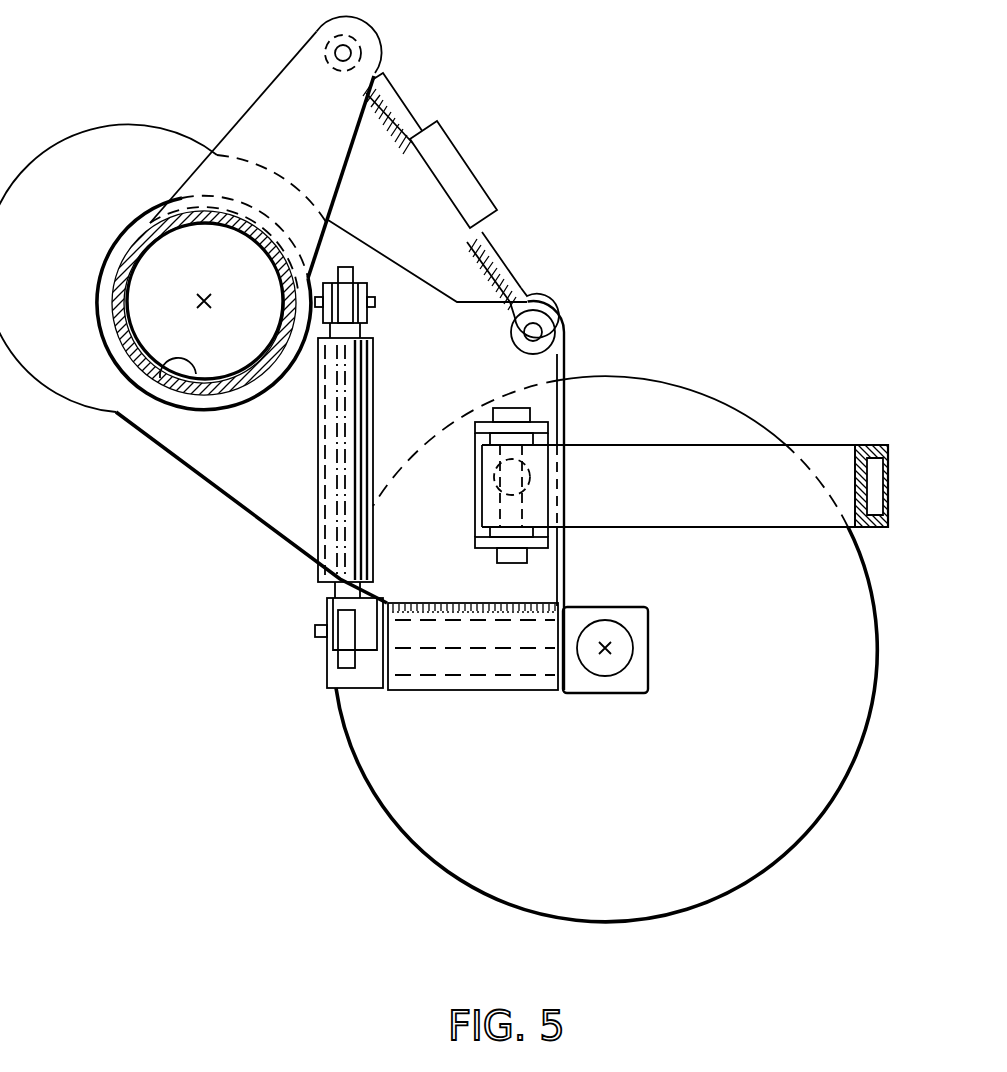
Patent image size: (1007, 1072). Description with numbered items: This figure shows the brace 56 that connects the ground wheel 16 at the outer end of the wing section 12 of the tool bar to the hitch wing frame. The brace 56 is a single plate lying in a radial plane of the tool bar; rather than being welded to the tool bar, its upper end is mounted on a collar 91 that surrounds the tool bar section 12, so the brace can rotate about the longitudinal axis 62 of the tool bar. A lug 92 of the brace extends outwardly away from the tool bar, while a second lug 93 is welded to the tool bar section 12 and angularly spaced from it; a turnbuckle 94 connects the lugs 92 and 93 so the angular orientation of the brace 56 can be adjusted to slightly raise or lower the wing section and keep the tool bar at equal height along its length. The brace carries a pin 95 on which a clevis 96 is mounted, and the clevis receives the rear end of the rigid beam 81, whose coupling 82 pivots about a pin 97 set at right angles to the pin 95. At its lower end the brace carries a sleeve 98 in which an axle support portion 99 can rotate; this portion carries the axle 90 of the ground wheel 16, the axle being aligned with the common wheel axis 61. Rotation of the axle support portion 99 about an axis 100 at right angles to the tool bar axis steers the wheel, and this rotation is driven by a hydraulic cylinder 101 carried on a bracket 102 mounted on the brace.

The first wing section 12 is at (155, 378).
The ground wheel 16 is at (406, 838).
The brace 56 is at (218, 506).
The axis 61 is at (610, 647).
The longitudinal axis 62 is at (203, 303).
The beam 81 is at (812, 445).
The coupling 82 is at (584, 436).
The axle 90 is at (618, 664).
The collar 91 is at (128, 222).
The lug 92 is at (563, 309).
The second lug 93 is at (291, 80).
The turnbuckle 94 is at (463, 184).
The pin 95 is at (497, 487).
The clevis 96 is at (470, 504).
The pin 97 is at (500, 558).
The sleeve 98 is at (443, 692).
The axle support portion 99 is at (603, 695).
The axis 100 is at (492, 655).
The hydraulic cylinder 101 is at (317, 448).
The bracket 102 is at (355, 264).